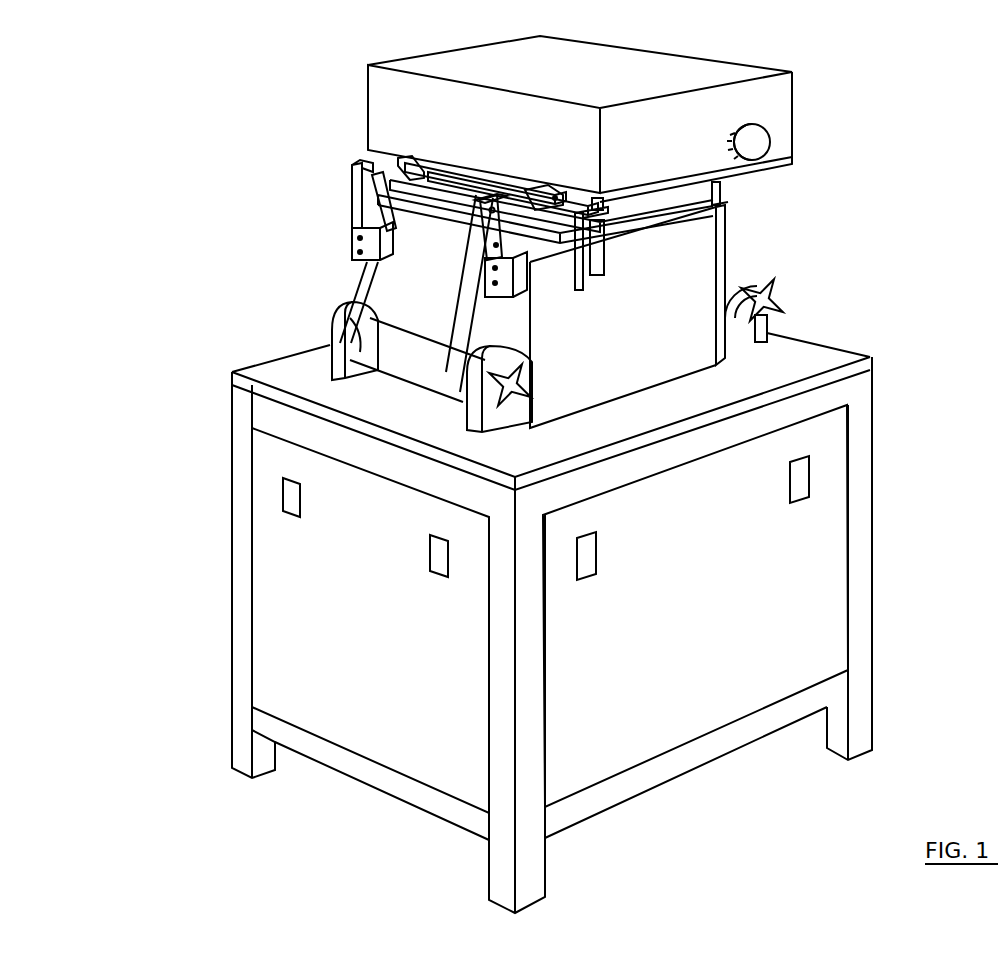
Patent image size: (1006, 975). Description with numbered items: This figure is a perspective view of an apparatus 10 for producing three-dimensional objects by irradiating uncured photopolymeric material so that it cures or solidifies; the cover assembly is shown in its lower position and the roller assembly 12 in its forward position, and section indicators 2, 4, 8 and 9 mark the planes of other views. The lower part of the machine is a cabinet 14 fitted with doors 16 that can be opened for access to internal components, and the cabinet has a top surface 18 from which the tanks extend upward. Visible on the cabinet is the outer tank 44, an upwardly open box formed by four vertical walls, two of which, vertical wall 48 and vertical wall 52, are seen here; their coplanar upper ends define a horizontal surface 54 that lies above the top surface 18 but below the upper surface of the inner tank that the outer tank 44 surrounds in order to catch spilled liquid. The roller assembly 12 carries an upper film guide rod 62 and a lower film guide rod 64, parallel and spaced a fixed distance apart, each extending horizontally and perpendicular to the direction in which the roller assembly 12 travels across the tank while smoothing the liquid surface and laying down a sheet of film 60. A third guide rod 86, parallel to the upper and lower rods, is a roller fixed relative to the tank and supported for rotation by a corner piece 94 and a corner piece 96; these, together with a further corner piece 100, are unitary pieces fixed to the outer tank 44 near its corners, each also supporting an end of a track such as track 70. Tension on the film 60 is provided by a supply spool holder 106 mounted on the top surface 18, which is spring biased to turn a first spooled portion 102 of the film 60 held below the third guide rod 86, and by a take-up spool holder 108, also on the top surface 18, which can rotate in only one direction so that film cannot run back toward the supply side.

The section line 2- 2 is at (873, 252).
The section line 4- 4 is at (335, 207).
The section line 8- 8 is at (636, 226).
The section line 9- 9 is at (330, 310).
The apparatus 10 is at (530, 613).
The roller assembly 12 is at (396, 158).
The cabinet 14 is at (872, 510).
The doors 16 is at (222, 632).
The top surface 18 is at (823, 355).
The outer tank 44 is at (733, 240).
The vertical wall 48 is at (509, 332).
The vertical wall 52 is at (697, 273).
The horizontal surface 54 is at (628, 232).
The film 60 is at (365, 288).
The upper film guide rod 62 is at (488, 182).
The lower film guide rod 64 is at (457, 180).
The second track 70 is at (718, 206).
The third guide rod 86 is at (363, 203).
The corner piece 94 is at (373, 177).
The corner piece 96 is at (483, 232).
The corner piece 100 is at (722, 185).
The first spooled portion 102 is at (443, 372).
The supply spool holder 106 is at (489, 404).
The take-up spool holder 108 is at (752, 323).